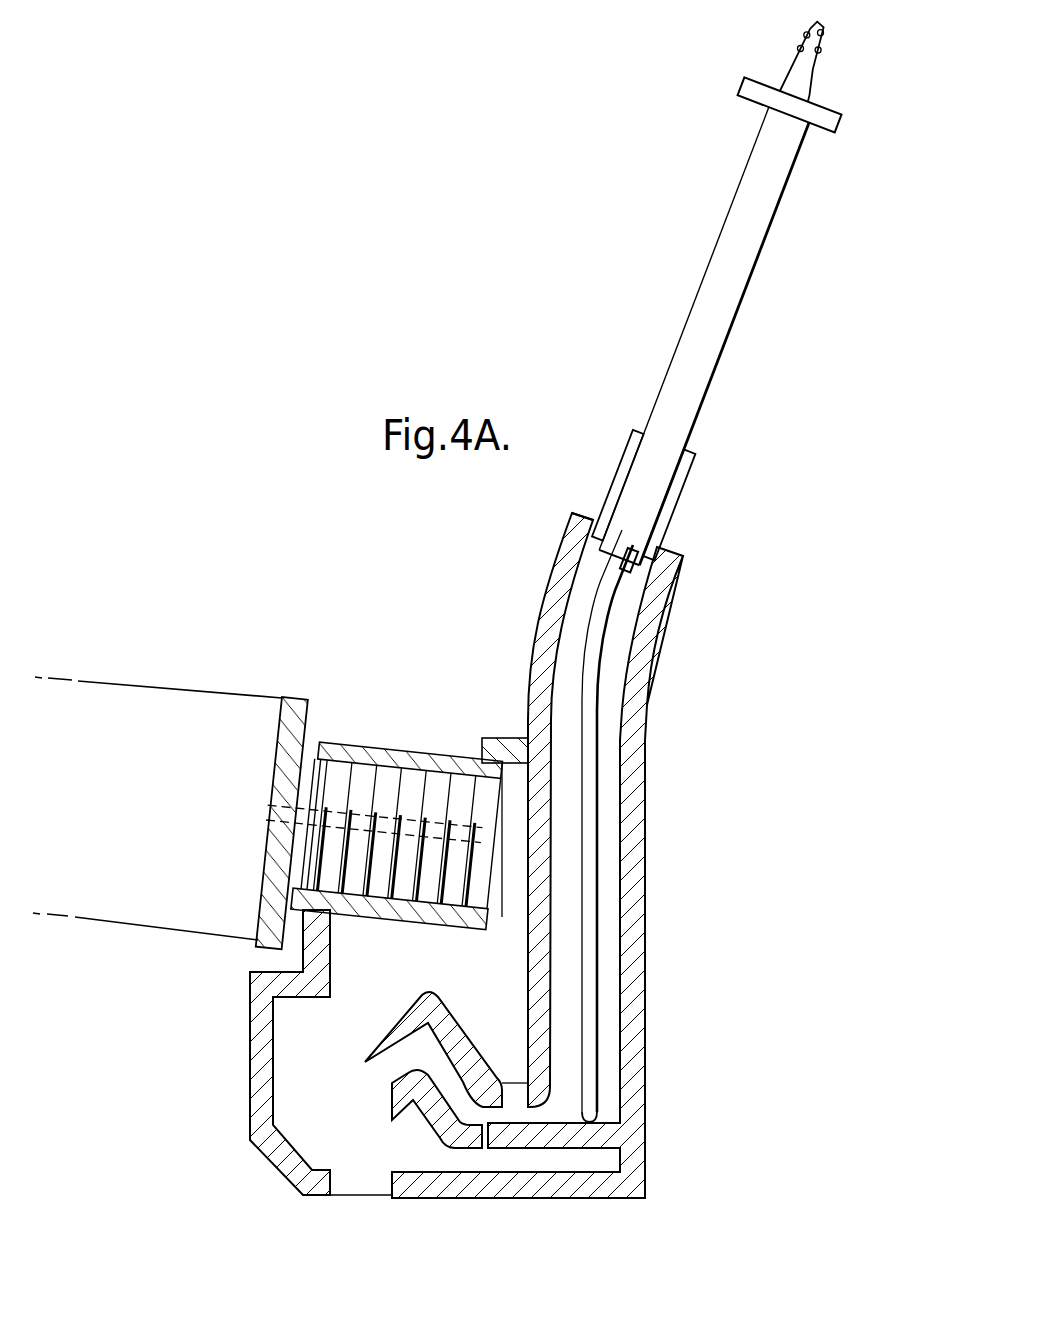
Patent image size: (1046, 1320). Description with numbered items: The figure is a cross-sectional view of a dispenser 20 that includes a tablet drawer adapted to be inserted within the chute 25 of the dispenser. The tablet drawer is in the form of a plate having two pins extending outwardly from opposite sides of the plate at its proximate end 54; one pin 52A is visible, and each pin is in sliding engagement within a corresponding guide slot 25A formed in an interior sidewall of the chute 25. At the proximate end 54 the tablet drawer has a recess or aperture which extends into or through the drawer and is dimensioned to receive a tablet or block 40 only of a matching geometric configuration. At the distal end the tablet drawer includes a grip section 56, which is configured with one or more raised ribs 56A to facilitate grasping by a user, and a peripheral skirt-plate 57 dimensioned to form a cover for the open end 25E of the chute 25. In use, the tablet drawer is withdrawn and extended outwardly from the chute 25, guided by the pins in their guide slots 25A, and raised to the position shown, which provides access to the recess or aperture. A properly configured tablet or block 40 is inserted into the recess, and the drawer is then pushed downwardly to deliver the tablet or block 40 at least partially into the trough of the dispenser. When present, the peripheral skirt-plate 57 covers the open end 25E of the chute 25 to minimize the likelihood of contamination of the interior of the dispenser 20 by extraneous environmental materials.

The dispenser 20 is at (662, 713).
The chute 25 is at (587, 579).
The guide slot 25A is at (585, 636).
The open end 25E is at (596, 509).
The tablet or block 40 is at (690, 476).
The pin 52A is at (628, 543).
The proximate end 54 is at (638, 570).
The grip section 56 is at (818, 76).
The raised rib 56A is at (797, 47).
The peripheral skirt-plate 57 is at (838, 116).